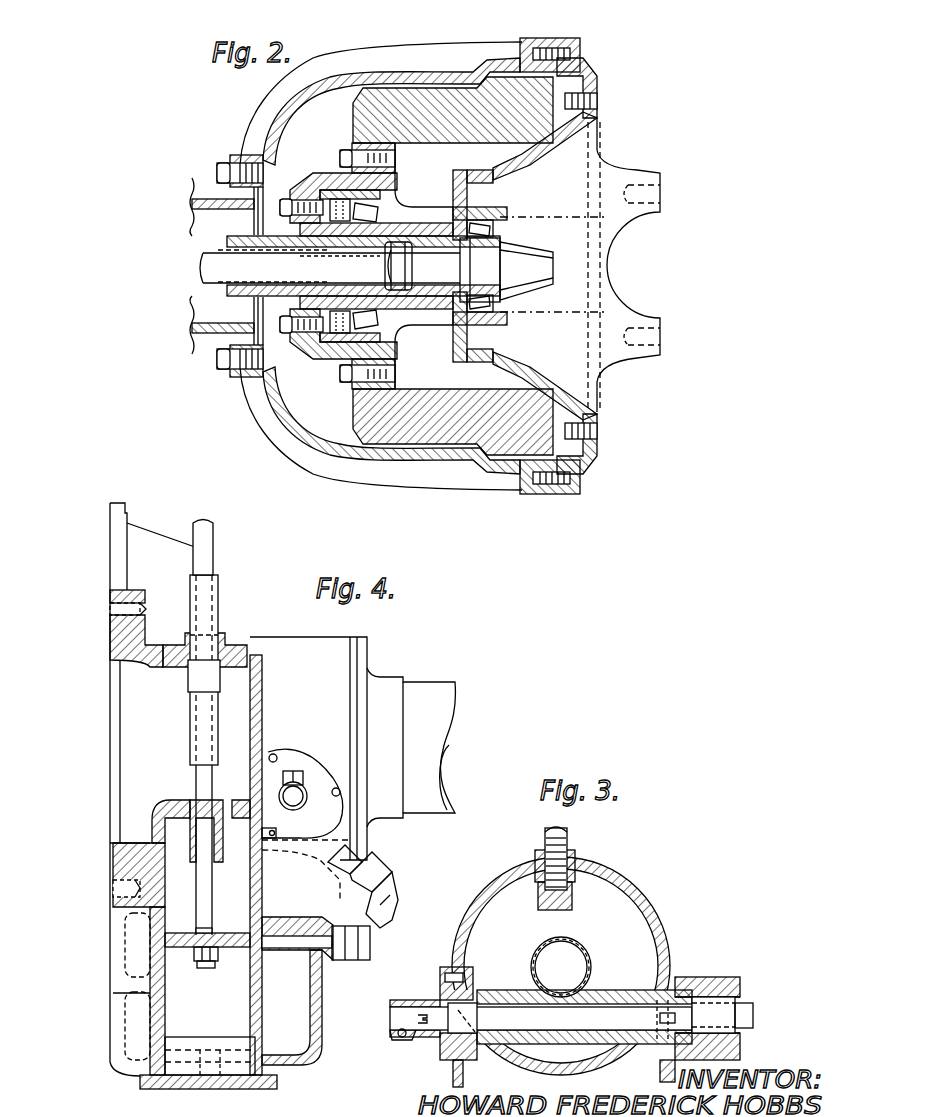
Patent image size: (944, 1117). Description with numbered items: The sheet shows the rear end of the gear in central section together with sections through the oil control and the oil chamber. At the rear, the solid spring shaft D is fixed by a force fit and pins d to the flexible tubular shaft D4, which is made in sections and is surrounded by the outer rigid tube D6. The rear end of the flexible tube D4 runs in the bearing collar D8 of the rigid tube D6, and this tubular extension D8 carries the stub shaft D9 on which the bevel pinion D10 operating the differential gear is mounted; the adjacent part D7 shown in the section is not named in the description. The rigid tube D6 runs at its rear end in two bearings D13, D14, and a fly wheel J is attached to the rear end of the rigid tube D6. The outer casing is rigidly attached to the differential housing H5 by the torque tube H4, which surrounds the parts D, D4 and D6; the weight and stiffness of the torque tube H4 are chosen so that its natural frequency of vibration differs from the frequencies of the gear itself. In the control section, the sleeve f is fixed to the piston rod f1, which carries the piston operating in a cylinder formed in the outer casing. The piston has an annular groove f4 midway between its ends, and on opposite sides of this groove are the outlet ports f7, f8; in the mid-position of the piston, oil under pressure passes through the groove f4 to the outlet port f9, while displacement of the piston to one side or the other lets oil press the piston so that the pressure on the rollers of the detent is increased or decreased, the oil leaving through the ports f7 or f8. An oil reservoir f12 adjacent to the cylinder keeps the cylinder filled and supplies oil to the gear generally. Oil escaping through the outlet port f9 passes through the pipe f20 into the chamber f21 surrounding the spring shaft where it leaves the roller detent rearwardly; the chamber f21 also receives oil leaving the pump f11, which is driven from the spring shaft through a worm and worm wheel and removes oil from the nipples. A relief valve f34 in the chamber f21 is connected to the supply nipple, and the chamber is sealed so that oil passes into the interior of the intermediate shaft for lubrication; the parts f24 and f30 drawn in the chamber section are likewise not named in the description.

In FIG. 2, the differential housing H5 is at (393, 78).
In FIG. 2, the torque tube H4 is at (194, 230).
In FIG. 4, the torque tube H4 is at (428, 698).
In FIG. 2, the fly wheel J is at (372, 119).
In FIG. 2, the spring shaft D is at (330, 268).
In FIG. 2, the flexible tubular shaft D4 is at (363, 257).
In FIG. 2, the rigid tube D6 is at (257, 237).
In FIG. 2, the bearing cap D7 is at (383, 230).
In FIG. 2, the bearing collar D8 is at (393, 240).
In FIG. 2, the stub shaft D9 is at (413, 266).
In FIG. 2, the bevel pinion D10 is at (523, 244).
In FIG. 2, the bearing D13 is at (484, 306).
In FIG. 2, the bearing D14 is at (402, 333).
In FIG. 2, the pins d is at (345, 256).
In FIG. 4, the sleeve f is at (207, 609).
In FIG. 4, the piston rod f1 is at (207, 548).
In FIG. 4, the annular groove f4 is at (183, 920).
In FIG. 4, the outlet port f7 is at (247, 920).
In FIG. 4, the outlet port f8 is at (247, 967).
In FIG. 4, the outlet port f9 is at (296, 943).
In FIG. 4, the oil reservoir f12 is at (180, 751).
In FIG. 4, the pipe f20 is at (380, 927).
In FIG. 4, the chamber f21 is at (308, 768).
In FIG. 3, the chamber f21 is at (561, 966).
In FIG. 3, the coupling f24 is at (463, 1004).
In FIG. 3, the bore f30 is at (560, 1020).
In FIG. 3, the relief valve f34 is at (562, 845).
In FIG. 3, the pump f11 is at (707, 1013).